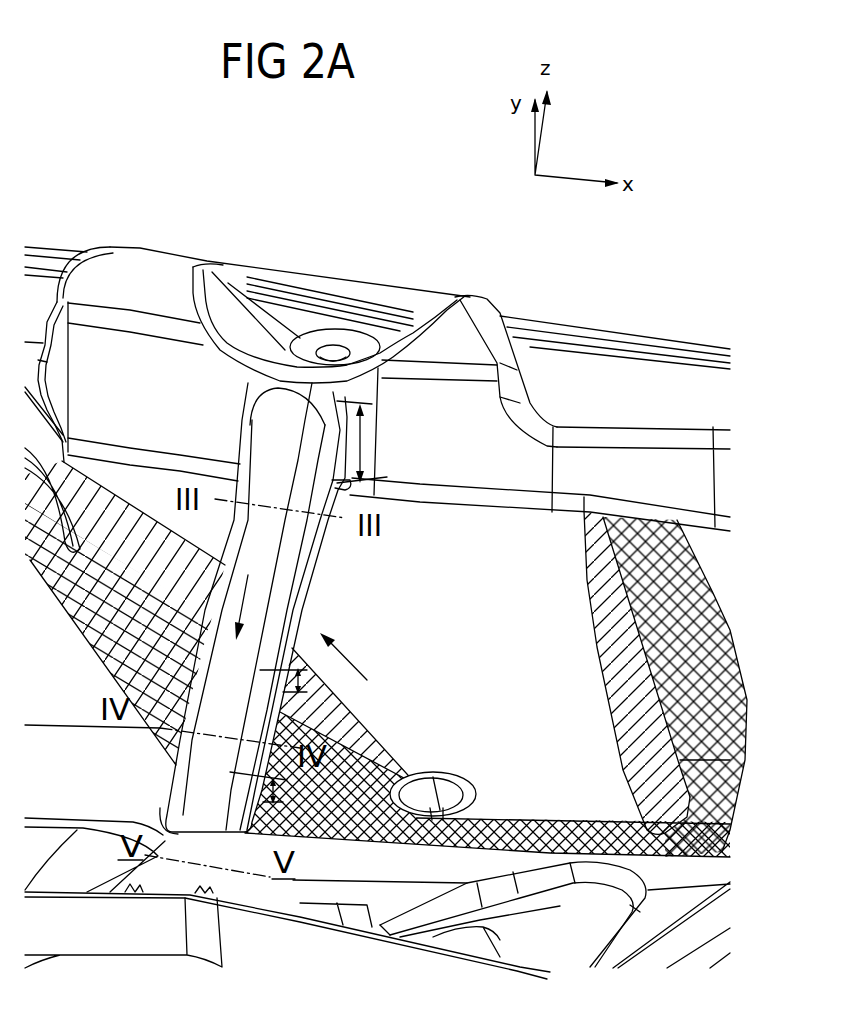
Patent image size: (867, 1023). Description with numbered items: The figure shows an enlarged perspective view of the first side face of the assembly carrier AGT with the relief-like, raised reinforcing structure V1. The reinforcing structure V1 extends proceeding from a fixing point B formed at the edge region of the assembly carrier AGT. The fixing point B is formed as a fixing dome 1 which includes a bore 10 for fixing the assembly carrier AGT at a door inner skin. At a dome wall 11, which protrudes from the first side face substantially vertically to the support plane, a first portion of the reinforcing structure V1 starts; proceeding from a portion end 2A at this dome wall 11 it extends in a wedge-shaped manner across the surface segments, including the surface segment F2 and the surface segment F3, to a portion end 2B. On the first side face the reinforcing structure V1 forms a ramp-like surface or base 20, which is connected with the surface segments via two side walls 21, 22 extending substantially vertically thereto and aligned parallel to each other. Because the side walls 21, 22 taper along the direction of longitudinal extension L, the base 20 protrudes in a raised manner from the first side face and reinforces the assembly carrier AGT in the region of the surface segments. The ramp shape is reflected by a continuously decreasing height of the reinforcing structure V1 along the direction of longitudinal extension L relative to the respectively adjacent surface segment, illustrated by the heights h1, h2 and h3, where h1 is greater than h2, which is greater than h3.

The fixing dome 1 is at (478, 320).
The bore 10 is at (326, 345).
The dome wall 11 is at (453, 467).
The base 20 is at (272, 573).
The side wall 21 is at (303, 602).
The side wall 22 is at (224, 548).
The portion end 2A is at (272, 395).
The portion end 2B is at (167, 815).
The fixing point B is at (222, 287).
The assembly carrier AGT is at (573, 325).
The surface segment F2 is at (595, 557).
The surface segment F3 is at (507, 820).
The height h1 is at (368, 445).
The height h2 is at (302, 682).
The height h3 is at (266, 789).
The direction of longitudinal extension L is at (245, 607).
The reinforcing structure V1 is at (361, 664).